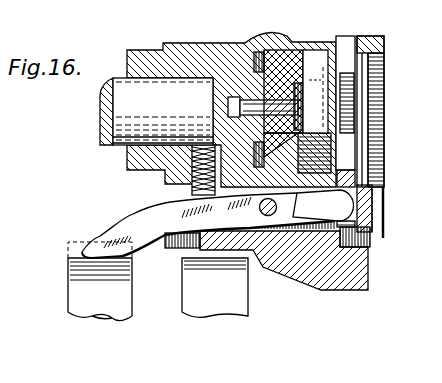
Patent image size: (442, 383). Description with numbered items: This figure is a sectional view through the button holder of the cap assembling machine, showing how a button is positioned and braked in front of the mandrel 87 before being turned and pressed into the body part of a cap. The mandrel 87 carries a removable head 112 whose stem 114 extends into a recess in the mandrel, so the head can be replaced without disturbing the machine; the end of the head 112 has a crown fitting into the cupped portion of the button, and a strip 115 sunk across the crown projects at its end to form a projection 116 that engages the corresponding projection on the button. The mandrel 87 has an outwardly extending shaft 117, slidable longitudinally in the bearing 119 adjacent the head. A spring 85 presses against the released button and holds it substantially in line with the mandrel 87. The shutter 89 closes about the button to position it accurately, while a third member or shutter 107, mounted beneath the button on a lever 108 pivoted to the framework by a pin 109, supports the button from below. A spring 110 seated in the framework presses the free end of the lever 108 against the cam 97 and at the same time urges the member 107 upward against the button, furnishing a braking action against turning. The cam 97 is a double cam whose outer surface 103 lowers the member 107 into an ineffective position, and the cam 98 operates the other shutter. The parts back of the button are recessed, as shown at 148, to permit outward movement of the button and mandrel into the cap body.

The bearing 119 is at (136, 56).
The stem 114 is at (246, 90).
The mandrel 87 is at (284, 64).
The removable head 112 is at (350, 48).
The spring 85 is at (366, 44).
The strip 115 is at (319, 91).
The shutter 89 is at (341, 113).
The shaft 117 is at (112, 135).
The spring 110 is at (167, 186).
The projection 116 is at (326, 188).
The pin 109 is at (267, 216).
The shutter 107 is at (322, 281).
The recess 148 is at (378, 236).
The outer surface 103 is at (69, 275).
The lever 108 is at (148, 229).
The cam 98 is at (214, 300).
The cam 97 is at (134, 319).